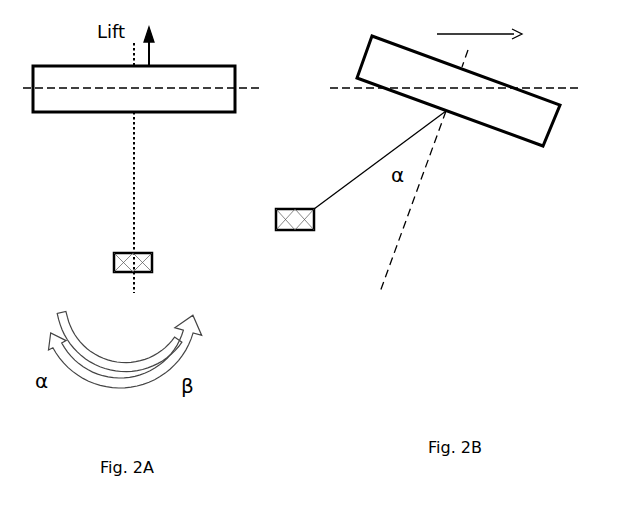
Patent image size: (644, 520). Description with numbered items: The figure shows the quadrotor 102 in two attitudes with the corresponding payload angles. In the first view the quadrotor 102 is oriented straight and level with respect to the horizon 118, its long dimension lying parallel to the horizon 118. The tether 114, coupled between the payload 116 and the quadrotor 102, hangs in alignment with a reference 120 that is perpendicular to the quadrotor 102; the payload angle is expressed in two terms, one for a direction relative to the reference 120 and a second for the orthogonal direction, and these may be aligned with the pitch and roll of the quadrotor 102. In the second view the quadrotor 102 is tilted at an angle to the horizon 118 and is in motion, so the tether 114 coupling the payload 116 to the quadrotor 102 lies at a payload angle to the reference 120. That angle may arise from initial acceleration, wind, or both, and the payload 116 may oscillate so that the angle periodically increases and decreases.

In FIG. 2A, the quadrotor 102 is at (235, 99).
In FIG. 2B, the quadrotor 102 is at (551, 140).
In FIG. 2A, the tether 114 is at (133, 164).
In FIG. 2B, the tether 114 is at (362, 173).
In FIG. 2A, the payload 116 is at (154, 268).
In FIG. 2B, the payload 116 is at (275, 220).
In FIG. 2A, the horizon 118 is at (247, 88).
In FIG. 2B, the horizon 118 is at (548, 88).
In FIG. 2A, the reference 120 is at (136, 197).
In FIG. 2B, the reference 120 is at (413, 208).